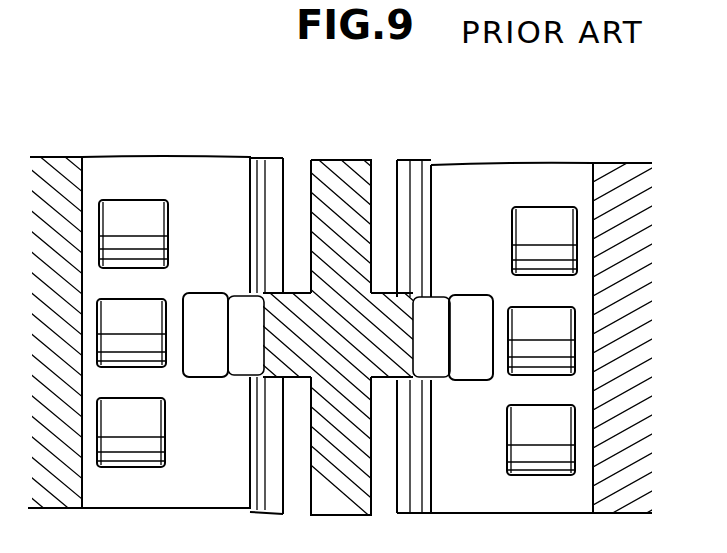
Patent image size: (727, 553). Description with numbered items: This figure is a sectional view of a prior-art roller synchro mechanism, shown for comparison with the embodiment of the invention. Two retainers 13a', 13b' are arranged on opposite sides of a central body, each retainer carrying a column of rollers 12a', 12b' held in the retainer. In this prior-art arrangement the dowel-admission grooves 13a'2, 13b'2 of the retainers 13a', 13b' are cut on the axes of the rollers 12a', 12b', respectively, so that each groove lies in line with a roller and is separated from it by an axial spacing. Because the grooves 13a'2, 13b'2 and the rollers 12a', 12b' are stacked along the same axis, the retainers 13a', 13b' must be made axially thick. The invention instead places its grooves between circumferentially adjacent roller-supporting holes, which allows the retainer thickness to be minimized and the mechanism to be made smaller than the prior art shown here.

The retainer 13a' is at (182, 313).
The retainer 13b' is at (495, 316).
The roller 12a' is at (163, 333).
The roller 12b' is at (514, 341).
The dowel-admission groove 13a'2 is at (219, 358).
The dowel-admission groove 13b'2 is at (455, 359).